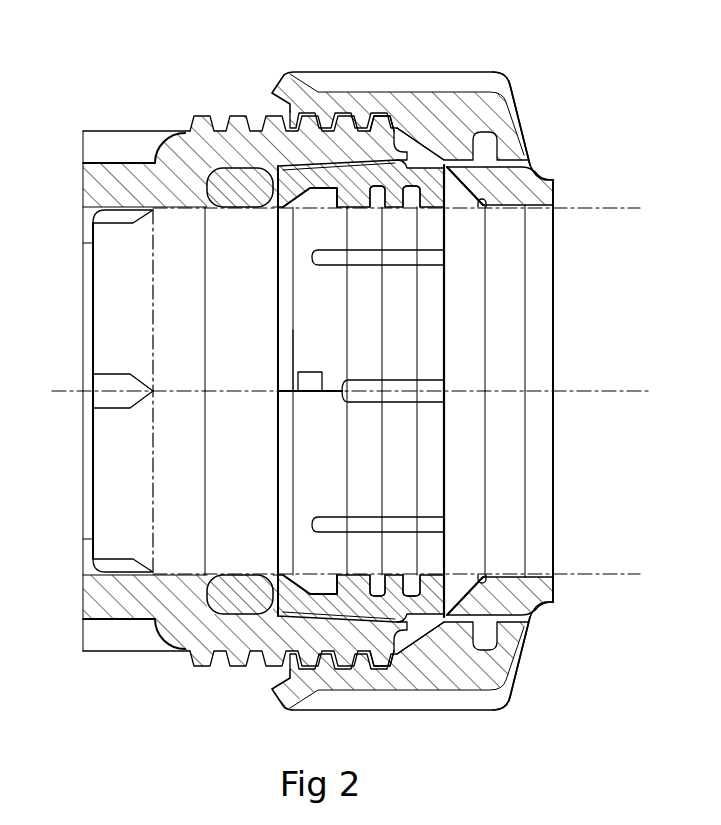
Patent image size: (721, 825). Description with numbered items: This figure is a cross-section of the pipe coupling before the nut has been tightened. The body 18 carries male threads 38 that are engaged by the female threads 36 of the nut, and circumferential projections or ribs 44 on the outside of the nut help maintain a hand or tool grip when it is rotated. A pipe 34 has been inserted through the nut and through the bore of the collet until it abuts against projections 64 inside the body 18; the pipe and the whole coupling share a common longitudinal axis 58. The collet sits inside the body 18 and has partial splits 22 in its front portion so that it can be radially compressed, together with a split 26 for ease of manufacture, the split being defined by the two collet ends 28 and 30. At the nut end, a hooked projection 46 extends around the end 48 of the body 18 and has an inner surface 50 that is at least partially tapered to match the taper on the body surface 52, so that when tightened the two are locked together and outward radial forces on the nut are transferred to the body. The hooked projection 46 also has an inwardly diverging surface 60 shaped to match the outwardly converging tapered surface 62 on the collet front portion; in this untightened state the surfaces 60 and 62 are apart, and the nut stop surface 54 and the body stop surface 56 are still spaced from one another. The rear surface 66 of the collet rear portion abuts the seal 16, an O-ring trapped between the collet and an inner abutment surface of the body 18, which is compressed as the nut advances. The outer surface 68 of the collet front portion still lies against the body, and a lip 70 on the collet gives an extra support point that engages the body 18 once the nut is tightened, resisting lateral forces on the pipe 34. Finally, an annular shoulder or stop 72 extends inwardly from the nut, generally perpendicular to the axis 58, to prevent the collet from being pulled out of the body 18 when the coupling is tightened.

The seal 16 is at (250, 197).
The body 18 is at (128, 167).
The partial splits 22 is at (334, 255).
The split 26 is at (313, 372).
The end of the collet 28 is at (318, 355).
The end of the collet 30 is at (310, 407).
The pipe 34 is at (612, 576).
The female threads 36 is at (350, 114).
The male threads 38 is at (322, 108).
The circumferential projections or ribs 44 is at (313, 78).
The hooked projection 46 is at (468, 173).
The end of the body 48 is at (392, 130).
The inner surface 50 is at (518, 128).
The body surface 52 is at (372, 197).
The nut stop surface 54 is at (512, 103).
The body stop surface 56 is at (414, 197).
The longitudinal axis 58 is at (638, 391).
The inwardly diverging surface 60 is at (460, 186).
The outwardly converging tapered surface 62 is at (446, 165).
The projections 64 is at (122, 398).
The rear surface 66 is at (278, 481).
The outer surface 68 is at (331, 198).
The lip 70 is at (410, 158).
The stop 72 is at (481, 206).